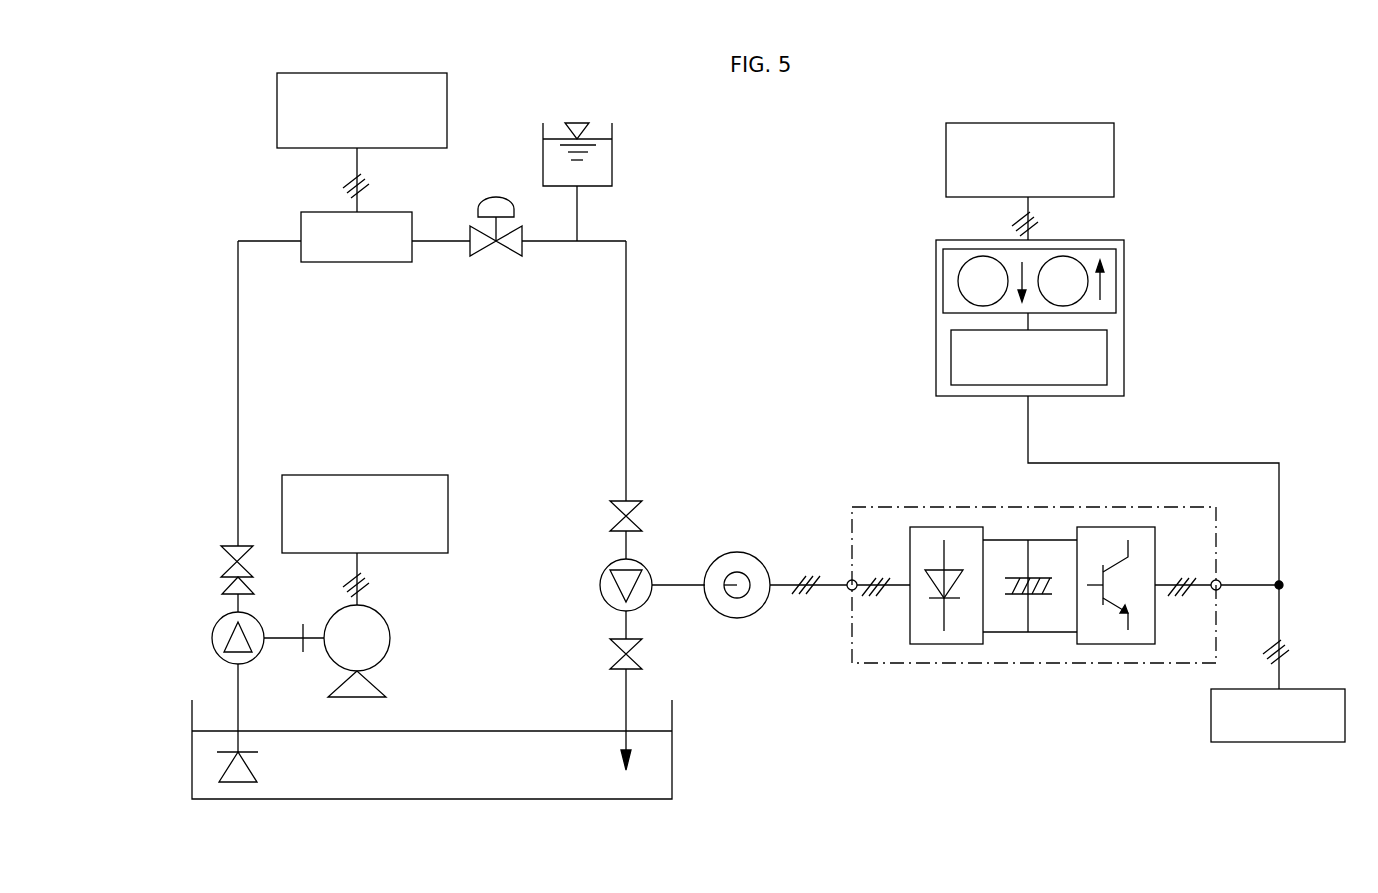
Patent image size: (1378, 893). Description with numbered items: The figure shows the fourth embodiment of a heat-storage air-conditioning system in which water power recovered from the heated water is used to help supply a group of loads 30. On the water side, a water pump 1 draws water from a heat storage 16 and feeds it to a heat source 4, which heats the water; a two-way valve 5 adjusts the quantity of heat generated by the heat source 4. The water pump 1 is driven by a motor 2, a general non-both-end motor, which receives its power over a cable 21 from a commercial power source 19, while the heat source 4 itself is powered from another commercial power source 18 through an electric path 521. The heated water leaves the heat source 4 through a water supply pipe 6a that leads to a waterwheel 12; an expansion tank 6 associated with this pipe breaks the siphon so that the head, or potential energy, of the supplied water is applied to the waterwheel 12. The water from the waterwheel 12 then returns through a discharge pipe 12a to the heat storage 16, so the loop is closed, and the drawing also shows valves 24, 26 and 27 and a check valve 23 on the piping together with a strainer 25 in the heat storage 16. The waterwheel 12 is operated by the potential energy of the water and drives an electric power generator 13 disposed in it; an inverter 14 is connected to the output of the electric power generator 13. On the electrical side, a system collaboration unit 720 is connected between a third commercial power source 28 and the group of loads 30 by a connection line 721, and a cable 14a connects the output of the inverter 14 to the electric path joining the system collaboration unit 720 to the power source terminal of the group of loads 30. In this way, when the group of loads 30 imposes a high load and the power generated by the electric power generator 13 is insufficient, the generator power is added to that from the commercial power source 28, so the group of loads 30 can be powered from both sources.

The water pump 1 is at (211, 635).
The motor 2 is at (385, 654).
The heat source 4 is at (402, 212).
The two-way valve 5 is at (502, 210).
The expansion tank 6 is at (613, 158).
The water supply pipe 6a is at (628, 290).
The waterwheel 12 is at (648, 600).
The discharge pipe 12a is at (622, 697).
The electric power generator 13 is at (737, 553).
The inverter 14 is at (1031, 665).
The cable 14a is at (1246, 584).
The heat storage 16 is at (341, 800).
The commercial power source 18 is at (277, 88).
The commercial power source 19 is at (448, 492).
The cable 21 is at (358, 594).
The check valve 23 is at (227, 590).
The valve 24 is at (231, 546).
The strainer 25 is at (256, 762).
The valve 26 is at (608, 518).
The valve 27 is at (604, 655).
The commercial power source 28 is at (1114, 136).
The group of loads 30 is at (1306, 743).
The electric path 521 is at (353, 160).
The system collaboration unit 720 is at (1124, 268).
The connection line 721 is at (1216, 462).